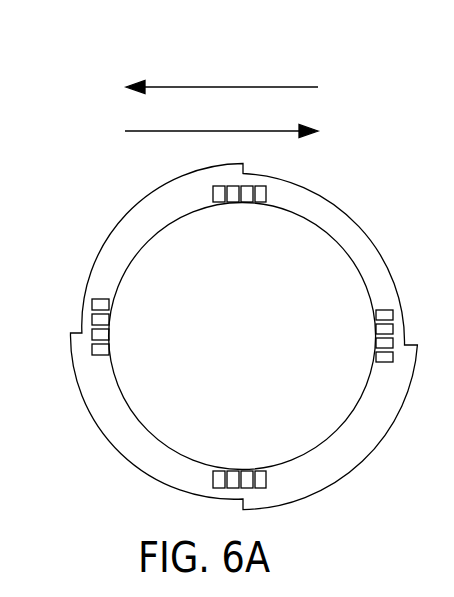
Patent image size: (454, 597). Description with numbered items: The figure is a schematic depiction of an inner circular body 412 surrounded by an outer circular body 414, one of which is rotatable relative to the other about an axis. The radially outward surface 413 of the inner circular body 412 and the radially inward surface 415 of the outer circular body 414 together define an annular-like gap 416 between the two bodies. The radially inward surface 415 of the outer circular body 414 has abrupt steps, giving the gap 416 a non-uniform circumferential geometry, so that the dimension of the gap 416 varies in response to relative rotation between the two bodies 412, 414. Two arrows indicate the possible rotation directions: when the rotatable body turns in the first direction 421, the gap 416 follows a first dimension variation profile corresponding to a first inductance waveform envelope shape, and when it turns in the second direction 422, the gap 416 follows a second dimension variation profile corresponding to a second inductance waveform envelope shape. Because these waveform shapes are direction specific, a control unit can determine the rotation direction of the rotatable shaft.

The inner circular body 412 is at (201, 397).
The radially outward surface 413 is at (112, 378).
The outer circular body 414 is at (75, 421).
The radially inward surface 415 is at (109, 434).
The annular-like gap 416 is at (318, 487).
The first direction 421 is at (243, 87).
The second direction 422 is at (152, 132).